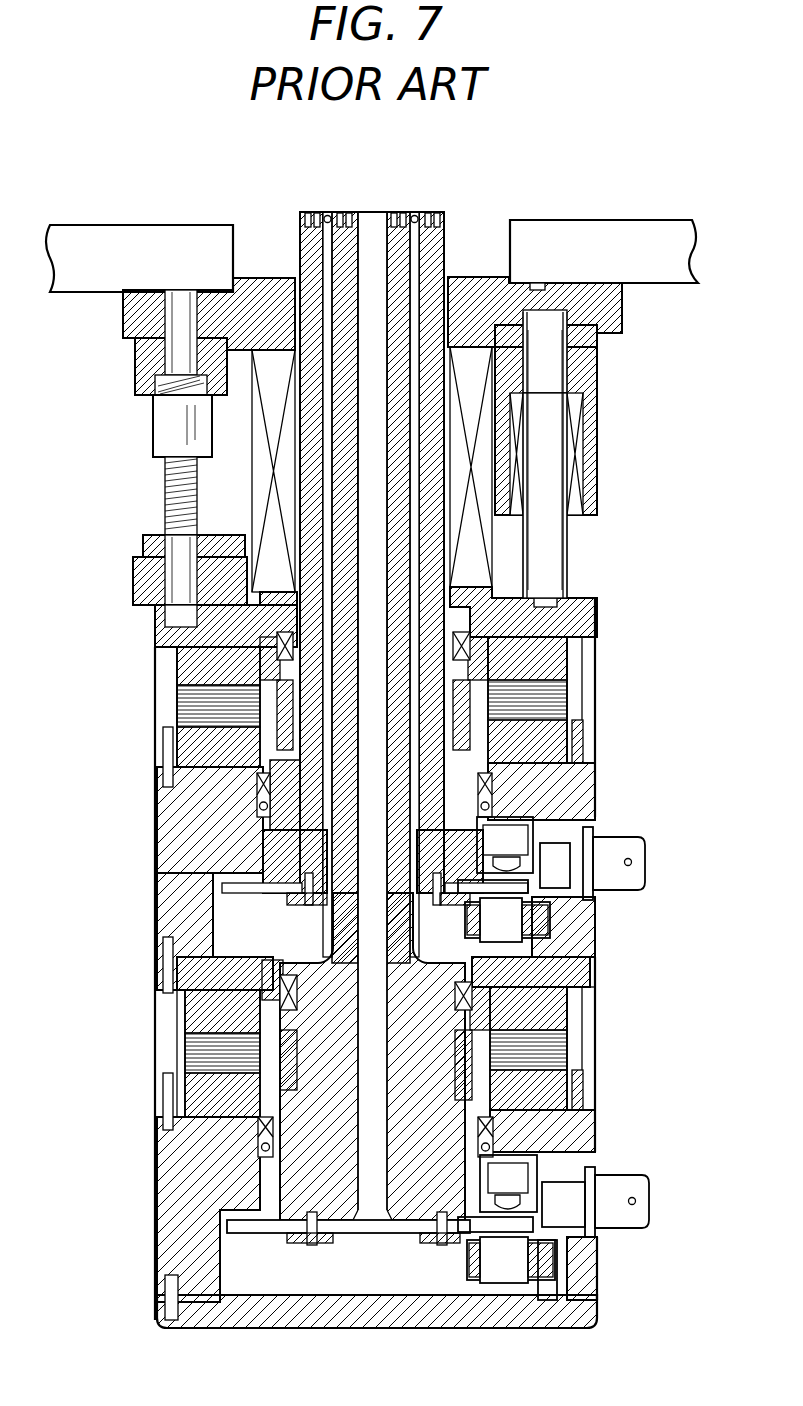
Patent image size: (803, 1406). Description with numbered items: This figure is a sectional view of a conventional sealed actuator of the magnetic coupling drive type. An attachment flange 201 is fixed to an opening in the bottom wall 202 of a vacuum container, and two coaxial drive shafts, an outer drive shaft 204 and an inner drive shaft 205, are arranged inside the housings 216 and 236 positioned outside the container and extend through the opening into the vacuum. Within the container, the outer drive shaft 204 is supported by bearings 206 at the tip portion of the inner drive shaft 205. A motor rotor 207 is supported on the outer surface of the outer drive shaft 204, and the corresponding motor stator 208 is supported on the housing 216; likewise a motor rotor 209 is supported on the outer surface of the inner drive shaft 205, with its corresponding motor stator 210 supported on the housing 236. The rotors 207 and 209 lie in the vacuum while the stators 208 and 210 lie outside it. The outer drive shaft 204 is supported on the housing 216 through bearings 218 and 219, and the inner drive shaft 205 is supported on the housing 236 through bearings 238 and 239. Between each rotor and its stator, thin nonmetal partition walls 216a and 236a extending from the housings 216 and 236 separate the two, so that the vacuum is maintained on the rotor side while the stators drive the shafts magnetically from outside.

The attachment flange 201 is at (127, 302).
The bottom wall 202 is at (588, 222).
The outer drive shaft 204 is at (426, 212).
The inner drive shaft 205 is at (377, 213).
The bearings 206 is at (320, 212).
The motor rotor 207 is at (490, 668).
The motor stator 208 is at (587, 698).
The motor rotor 209 is at (483, 1020).
The motor stator 210 is at (573, 1047).
The housing 216 is at (158, 835).
The thin nonmetal partition wall 216a is at (265, 667).
The bearing 218 is at (500, 597).
The bearing 219 is at (488, 797).
The housing 236 is at (158, 1227).
The thin nonmetal partition wall 236a is at (182, 1022).
The bearing 238 is at (277, 978).
The bearing 239 is at (260, 1145).